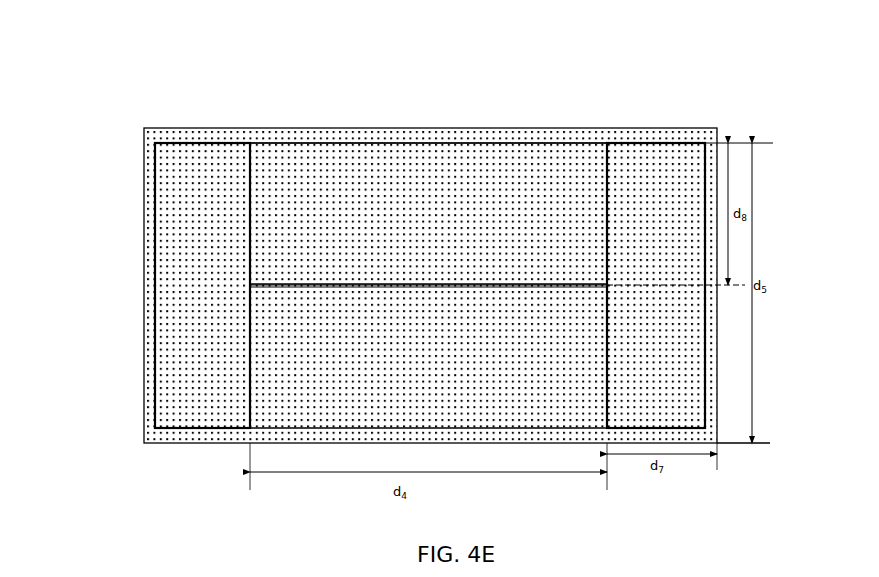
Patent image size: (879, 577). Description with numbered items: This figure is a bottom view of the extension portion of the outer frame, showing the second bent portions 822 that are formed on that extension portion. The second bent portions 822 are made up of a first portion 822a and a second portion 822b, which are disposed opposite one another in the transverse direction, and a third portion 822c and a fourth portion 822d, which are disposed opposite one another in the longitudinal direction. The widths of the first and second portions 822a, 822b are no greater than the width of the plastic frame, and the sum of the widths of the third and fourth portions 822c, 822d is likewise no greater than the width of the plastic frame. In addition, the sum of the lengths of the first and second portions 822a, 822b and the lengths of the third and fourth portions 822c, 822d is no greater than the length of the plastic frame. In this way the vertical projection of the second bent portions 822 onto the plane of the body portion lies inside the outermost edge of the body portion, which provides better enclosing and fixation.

The second bent portions 822 is at (208, 190).
The first portion of the second bent portions 822a is at (167, 292).
The second portion of the second bent portions 822b is at (662, 322).
The third portion of the second bent portions 822c is at (332, 397).
The fourth portion of the second bent portions 822d is at (330, 200).